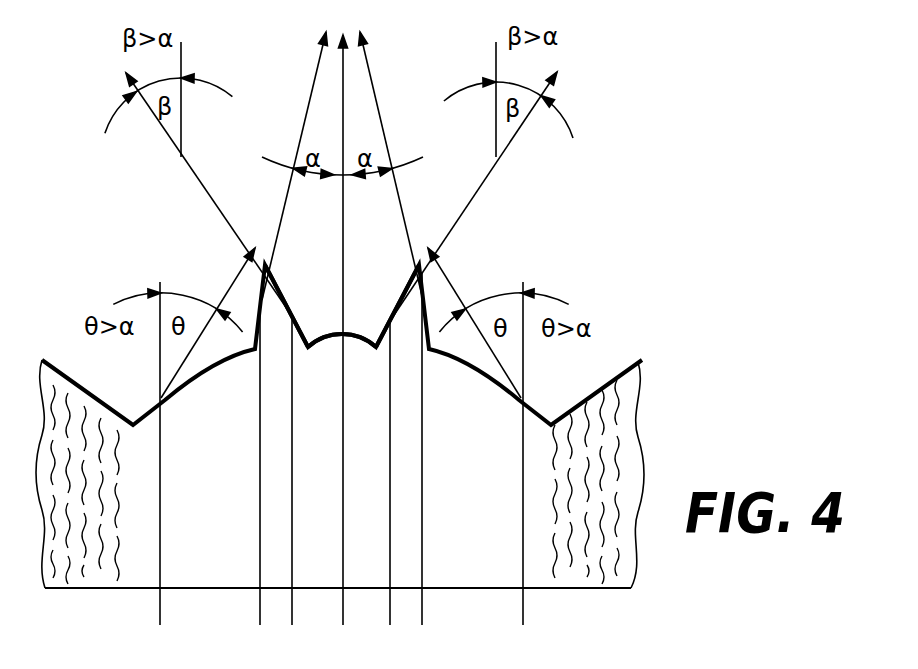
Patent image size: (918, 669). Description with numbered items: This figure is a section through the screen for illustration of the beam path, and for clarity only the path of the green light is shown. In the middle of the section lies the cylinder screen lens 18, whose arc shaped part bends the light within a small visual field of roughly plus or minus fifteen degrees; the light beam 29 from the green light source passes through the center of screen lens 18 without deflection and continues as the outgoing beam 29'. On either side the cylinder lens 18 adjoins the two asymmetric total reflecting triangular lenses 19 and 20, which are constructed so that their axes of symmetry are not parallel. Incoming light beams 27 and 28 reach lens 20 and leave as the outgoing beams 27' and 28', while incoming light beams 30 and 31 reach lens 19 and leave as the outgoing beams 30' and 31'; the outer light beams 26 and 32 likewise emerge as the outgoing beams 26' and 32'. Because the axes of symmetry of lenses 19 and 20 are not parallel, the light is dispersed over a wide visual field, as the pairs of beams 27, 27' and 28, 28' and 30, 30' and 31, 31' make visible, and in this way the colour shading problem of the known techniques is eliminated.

The screen lens 18 is at (357, 335).
The asymmetric total reflecting lens 19 is at (405, 291).
The asymmetric total reflecting lens 20 is at (282, 297).
The light beam 26 is at (159, 475).
The light beam 27 is at (259, 484).
The light beam 28 is at (291, 492).
The light beam 29 is at (342, 500).
The light beam 30 is at (389, 494).
The light beam 31 is at (423, 470).
The light beam 32 is at (522, 475).
The light beam 26' is at (218, 307).
The light beam 27' is at (294, 158).
The light beam 28' is at (184, 186).
The light beam 29' is at (350, 168).
The light beam 30' is at (499, 183).
The light beam 31' is at (391, 158).
The light beam 32' is at (469, 307).